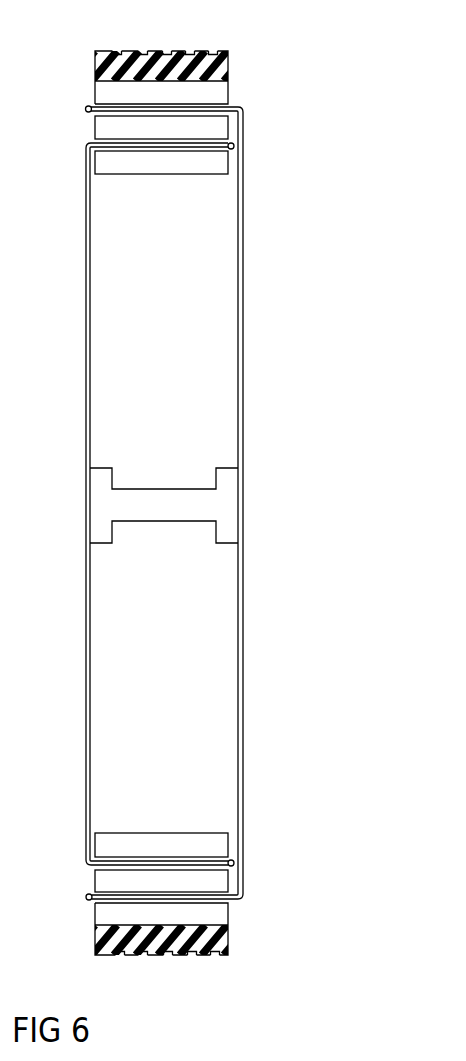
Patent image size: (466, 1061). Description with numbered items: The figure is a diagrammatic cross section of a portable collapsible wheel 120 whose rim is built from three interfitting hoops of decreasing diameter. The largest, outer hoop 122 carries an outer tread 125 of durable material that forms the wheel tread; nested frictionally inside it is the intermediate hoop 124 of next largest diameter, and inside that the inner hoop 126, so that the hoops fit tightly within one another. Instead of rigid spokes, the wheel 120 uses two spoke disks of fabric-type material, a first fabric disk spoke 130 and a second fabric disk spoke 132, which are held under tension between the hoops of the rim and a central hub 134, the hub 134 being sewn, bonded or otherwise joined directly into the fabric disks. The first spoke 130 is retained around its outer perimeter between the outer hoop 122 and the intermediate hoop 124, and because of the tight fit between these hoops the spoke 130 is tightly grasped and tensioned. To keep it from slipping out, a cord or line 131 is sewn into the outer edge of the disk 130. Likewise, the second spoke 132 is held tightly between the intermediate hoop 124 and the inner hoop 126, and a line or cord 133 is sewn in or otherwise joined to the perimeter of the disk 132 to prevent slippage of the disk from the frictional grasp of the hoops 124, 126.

The portable collapsible wheel 120 is at (368, 218).
The outer hoop 122 is at (230, 90).
The intermediate hoop 124 is at (95, 126).
The outer tread 125 is at (170, 50).
The inner hoop 126 is at (112, 174).
The fabric disk spoke 130 is at (243, 335).
The cord or line 131 is at (86, 108).
The fabric disk spoke 132 is at (86, 332).
The line or cord 133 is at (234, 146).
The central hub 134 is at (153, 489).